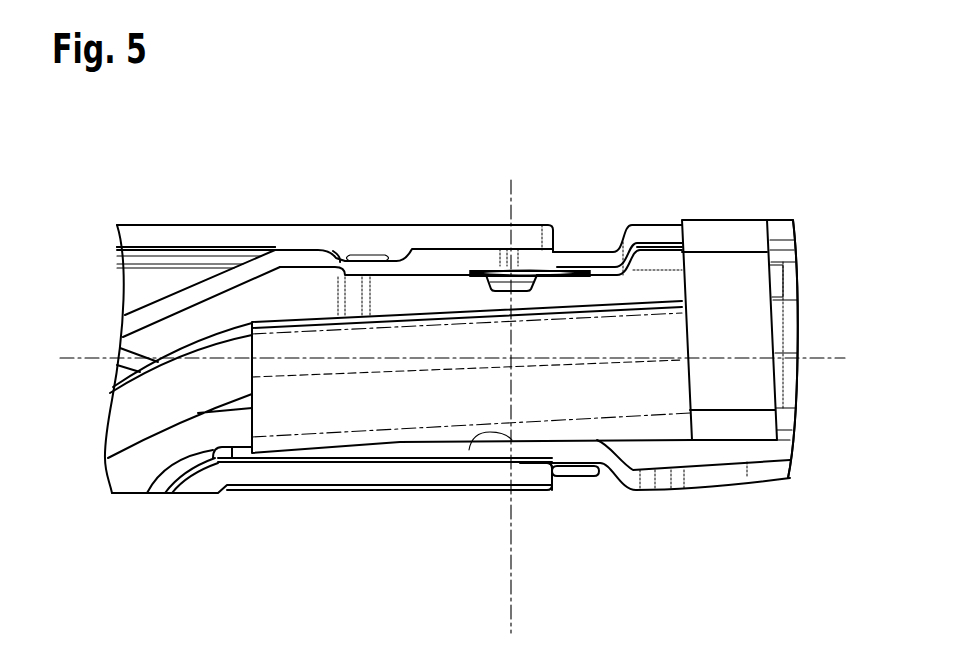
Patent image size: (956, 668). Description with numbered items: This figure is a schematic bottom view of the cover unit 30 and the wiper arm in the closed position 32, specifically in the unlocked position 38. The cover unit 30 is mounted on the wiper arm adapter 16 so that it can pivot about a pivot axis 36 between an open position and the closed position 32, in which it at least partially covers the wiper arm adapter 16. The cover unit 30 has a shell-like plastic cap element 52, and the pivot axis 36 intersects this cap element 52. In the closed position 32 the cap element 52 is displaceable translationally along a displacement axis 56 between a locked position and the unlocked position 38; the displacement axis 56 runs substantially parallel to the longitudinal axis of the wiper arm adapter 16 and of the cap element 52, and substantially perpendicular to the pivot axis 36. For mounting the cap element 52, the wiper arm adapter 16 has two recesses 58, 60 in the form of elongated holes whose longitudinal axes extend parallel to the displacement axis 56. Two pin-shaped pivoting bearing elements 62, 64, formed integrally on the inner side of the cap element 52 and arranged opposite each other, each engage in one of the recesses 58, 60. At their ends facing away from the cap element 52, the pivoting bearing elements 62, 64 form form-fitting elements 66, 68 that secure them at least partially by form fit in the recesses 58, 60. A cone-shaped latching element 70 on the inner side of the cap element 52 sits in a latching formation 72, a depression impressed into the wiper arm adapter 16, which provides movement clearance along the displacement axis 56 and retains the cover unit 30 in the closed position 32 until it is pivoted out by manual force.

The wiper arm adapter 16 is at (653, 232).
The cover unit 30 is at (393, 310).
The closed position 32 is at (472, 452).
The pivot axis 36 is at (511, 630).
The unlocked position 38 is at (472, 452).
The cap element 52 is at (231, 226).
The displacement axis 56 is at (830, 362).
The recess 58 is at (560, 286).
The recess 60 is at (575, 481).
The pivoting bearing element 62 is at (521, 245).
The pivoting bearing element 64 is at (530, 466).
The form-fitting element 66 is at (482, 266).
The form-fitting element 68 is at (469, 452).
The latching element 70 is at (363, 226).
The latching formation 72 is at (402, 226).